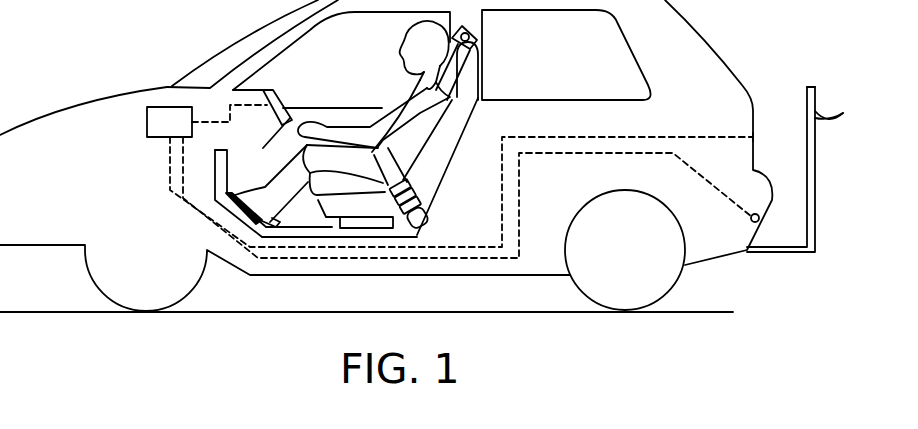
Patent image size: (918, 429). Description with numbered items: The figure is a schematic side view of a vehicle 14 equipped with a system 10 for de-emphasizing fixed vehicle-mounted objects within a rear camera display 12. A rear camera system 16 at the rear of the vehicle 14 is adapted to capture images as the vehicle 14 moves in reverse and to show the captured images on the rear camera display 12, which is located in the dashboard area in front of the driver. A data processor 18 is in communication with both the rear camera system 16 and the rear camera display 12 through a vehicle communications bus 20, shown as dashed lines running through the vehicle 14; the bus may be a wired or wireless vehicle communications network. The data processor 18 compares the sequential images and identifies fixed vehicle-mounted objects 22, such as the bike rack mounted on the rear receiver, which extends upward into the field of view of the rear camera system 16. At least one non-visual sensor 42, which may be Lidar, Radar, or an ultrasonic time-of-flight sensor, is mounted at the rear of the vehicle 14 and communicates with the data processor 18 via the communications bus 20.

The system 10 is at (167, 334).
The rear camera display 12 is at (278, 102).
The vehicle 14 is at (103, 97).
The rear camera system 16 is at (754, 137).
The data processor 18 is at (182, 131).
The vehicle communications bus 20 is at (193, 210).
The fixed vehicle-mounted object 22 is at (812, 197).
The non-visual sensor 42 is at (758, 222).